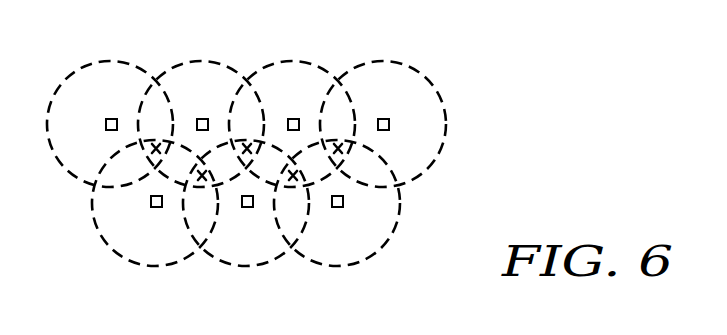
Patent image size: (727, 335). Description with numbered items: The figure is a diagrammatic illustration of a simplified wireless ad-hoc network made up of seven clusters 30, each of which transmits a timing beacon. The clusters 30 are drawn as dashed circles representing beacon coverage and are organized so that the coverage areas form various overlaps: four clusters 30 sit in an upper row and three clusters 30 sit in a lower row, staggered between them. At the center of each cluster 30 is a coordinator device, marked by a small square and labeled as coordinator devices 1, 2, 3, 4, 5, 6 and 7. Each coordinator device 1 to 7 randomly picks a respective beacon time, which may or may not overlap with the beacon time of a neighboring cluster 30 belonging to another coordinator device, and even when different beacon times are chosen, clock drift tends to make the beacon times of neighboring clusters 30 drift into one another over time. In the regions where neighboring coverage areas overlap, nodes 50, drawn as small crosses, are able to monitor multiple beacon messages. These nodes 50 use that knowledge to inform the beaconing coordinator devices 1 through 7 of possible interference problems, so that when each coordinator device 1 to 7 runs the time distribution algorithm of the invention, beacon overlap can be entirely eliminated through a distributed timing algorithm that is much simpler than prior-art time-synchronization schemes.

The cluster 30 is at (304, 61).
The node 50 is at (157, 145).
The coordinator device 1 is at (111, 113).
The coordinator device 2 is at (202, 113).
The coordinator device 3 is at (293, 113).
The coordinator device 4 is at (383, 113).
The coordinator device 5 is at (156, 214).
The coordinator device 6 is at (247, 214).
The coordinator device 7 is at (337, 214).